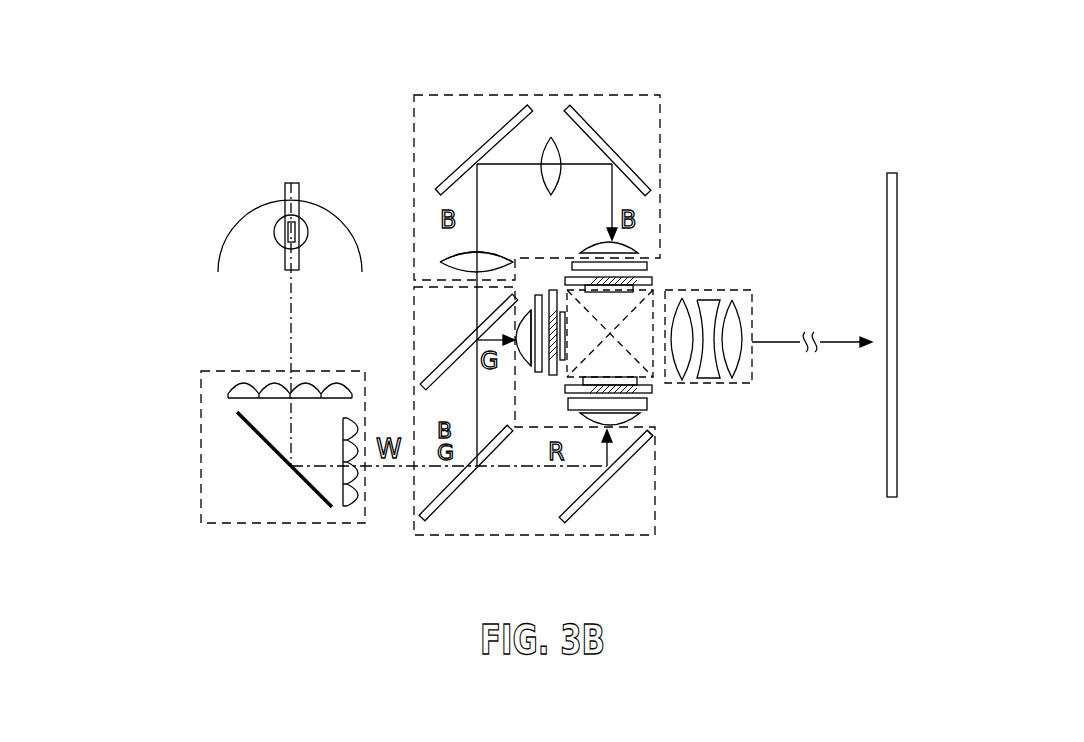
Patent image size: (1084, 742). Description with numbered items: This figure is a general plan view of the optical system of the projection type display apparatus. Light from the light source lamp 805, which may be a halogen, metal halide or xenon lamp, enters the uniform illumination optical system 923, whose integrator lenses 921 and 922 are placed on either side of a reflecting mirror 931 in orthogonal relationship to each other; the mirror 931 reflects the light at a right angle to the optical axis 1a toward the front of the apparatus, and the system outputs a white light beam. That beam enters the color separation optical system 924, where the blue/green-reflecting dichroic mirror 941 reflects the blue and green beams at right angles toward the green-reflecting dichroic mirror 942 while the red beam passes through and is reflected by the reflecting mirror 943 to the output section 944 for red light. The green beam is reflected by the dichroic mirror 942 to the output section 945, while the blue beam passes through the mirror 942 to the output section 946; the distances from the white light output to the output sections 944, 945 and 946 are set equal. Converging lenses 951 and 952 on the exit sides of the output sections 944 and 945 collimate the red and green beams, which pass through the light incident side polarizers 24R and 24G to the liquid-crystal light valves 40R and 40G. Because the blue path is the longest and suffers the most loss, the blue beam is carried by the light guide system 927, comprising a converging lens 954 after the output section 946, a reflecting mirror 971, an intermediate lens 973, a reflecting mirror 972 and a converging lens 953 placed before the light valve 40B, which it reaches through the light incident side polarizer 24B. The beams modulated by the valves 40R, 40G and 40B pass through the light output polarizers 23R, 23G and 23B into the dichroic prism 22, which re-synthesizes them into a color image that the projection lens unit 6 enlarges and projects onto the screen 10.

The light source lamp 805 is at (243, 226).
The optical axis 1a is at (285, 330).
The integrator lens 921 is at (232, 392).
The integrator lens 922 is at (347, 506).
The illumination optical system 923 is at (201, 455).
The reflecting mirror 931 is at (302, 478).
The light guide system 927 is at (443, 93).
The reflecting mirror 971 is at (455, 165).
The reflecting mirror 972 is at (620, 148).
The intermediate lens 973 is at (551, 137).
The output section for the blue light beam 946 is at (463, 275).
The converging lens 954 is at (445, 255).
The green-reflecting dichroic mirror 942 is at (458, 346).
The color separation optical system 924 is at (655, 520).
The blue/green-reflecting dichroic mirror 941 is at (447, 495).
The reflecting mirror 943 is at (580, 505).
The output section for the red light beam 944 is at (645, 445).
The output section for the green light beam 945 is at (519, 356).
The converging lens 952 is at (524, 290).
The light incident side polarizer 24G is at (536, 318).
The liquid-crystal light valve 40G is at (553, 290).
The light output polarizer 23G is at (560, 365).
The converging lens 953 is at (630, 253).
The light incident side polarizer 24B is at (638, 266).
The liquid-crystal light valve 40B is at (648, 281).
The light output polarizer 23B is at (620, 293).
The dichroic prism 22 is at (648, 300).
The light output polarizer 23R is at (640, 381).
The liquid-crystal light valve 40R is at (652, 390).
The light incident side polarizer 24R is at (647, 406).
The converging lens 951 is at (640, 422).
The projection lens unit 6 is at (756, 311).
The screen 10 is at (897, 238).